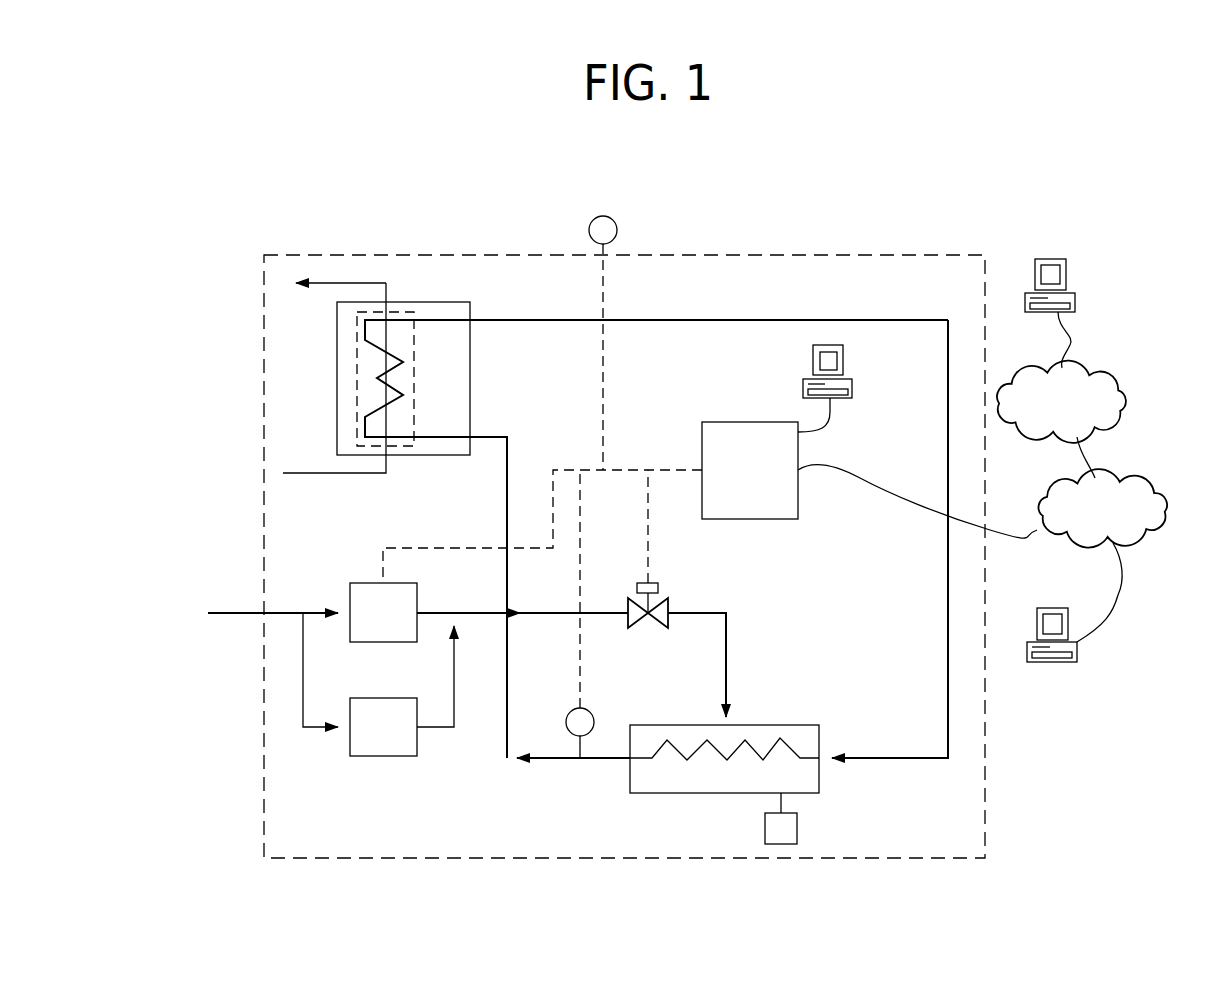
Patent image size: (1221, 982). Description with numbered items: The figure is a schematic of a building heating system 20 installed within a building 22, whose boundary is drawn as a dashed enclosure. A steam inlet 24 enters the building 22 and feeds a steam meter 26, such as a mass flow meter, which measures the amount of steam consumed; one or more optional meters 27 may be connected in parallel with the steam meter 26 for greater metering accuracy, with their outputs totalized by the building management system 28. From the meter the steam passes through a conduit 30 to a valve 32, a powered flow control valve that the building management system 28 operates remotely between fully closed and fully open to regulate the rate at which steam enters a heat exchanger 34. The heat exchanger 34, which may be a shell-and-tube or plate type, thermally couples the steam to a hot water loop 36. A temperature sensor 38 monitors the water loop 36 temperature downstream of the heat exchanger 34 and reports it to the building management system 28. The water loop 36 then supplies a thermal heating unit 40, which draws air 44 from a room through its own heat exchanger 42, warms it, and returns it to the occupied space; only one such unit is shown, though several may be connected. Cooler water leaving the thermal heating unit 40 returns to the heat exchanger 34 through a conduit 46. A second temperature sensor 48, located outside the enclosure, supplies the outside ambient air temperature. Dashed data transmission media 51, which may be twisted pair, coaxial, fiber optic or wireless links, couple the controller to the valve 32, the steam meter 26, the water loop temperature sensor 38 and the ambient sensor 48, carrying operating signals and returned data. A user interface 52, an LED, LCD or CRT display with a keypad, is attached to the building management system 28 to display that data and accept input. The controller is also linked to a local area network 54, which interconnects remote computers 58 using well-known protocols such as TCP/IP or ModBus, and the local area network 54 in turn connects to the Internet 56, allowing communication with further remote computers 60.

The building heating system 20 is at (433, 220).
The building 22 is at (264, 380).
The steam inlet 24 is at (218, 613).
The steam meter 26 is at (377, 642).
The optional meters 27 is at (422, 748).
The building management system 28 is at (798, 510).
The conduit 30 is at (470, 608).
The valve 32 is at (667, 601).
The heat exchanger 34 is at (795, 725).
The hot water loop 36 is at (895, 758).
The temperature sensor 38 is at (593, 713).
The thermal heating unit 40 is at (450, 302).
The heat exchanger 42 is at (418, 348).
The air 44 is at (328, 474).
The conduit 46 is at (772, 318).
The second temperature sensor 48 is at (613, 219).
The data transmission media 51 is at (563, 470).
The user interface 52 is at (845, 365).
The local area network 54 is at (1152, 535).
The Internet 56 is at (1127, 385).
The remote computers 58 is at (1077, 656).
The remote computers 60 is at (1066, 273).